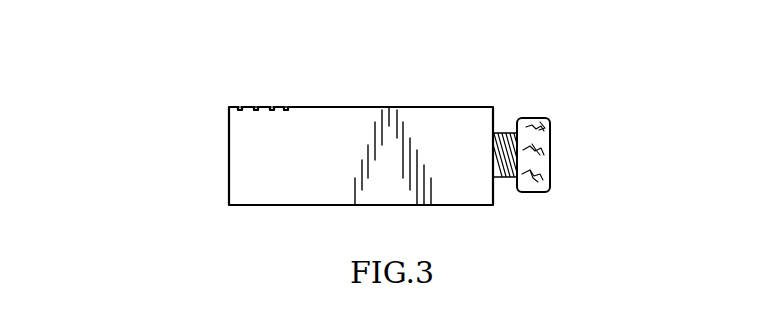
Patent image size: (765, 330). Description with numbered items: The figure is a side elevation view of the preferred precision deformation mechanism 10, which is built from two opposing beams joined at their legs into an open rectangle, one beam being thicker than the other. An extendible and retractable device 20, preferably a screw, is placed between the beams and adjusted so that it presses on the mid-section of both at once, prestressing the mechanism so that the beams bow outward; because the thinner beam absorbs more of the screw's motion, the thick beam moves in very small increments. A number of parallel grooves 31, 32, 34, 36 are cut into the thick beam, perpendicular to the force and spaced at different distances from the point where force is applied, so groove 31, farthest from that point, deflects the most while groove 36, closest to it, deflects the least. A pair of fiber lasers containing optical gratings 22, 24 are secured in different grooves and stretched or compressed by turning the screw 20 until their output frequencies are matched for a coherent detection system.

The precision deformation mechanism 10 is at (223, 253).
The extendible and retractable device 20 is at (533, 118).
The fiber laser containing optical grating 22 is at (257, 107).
The fiber laser containing optical grating 24 is at (287, 107).
The groove 31 is at (243, 108).
The groove 32 is at (258, 108).
The groove 34 is at (274, 108).
The groove 36 is at (288, 108).